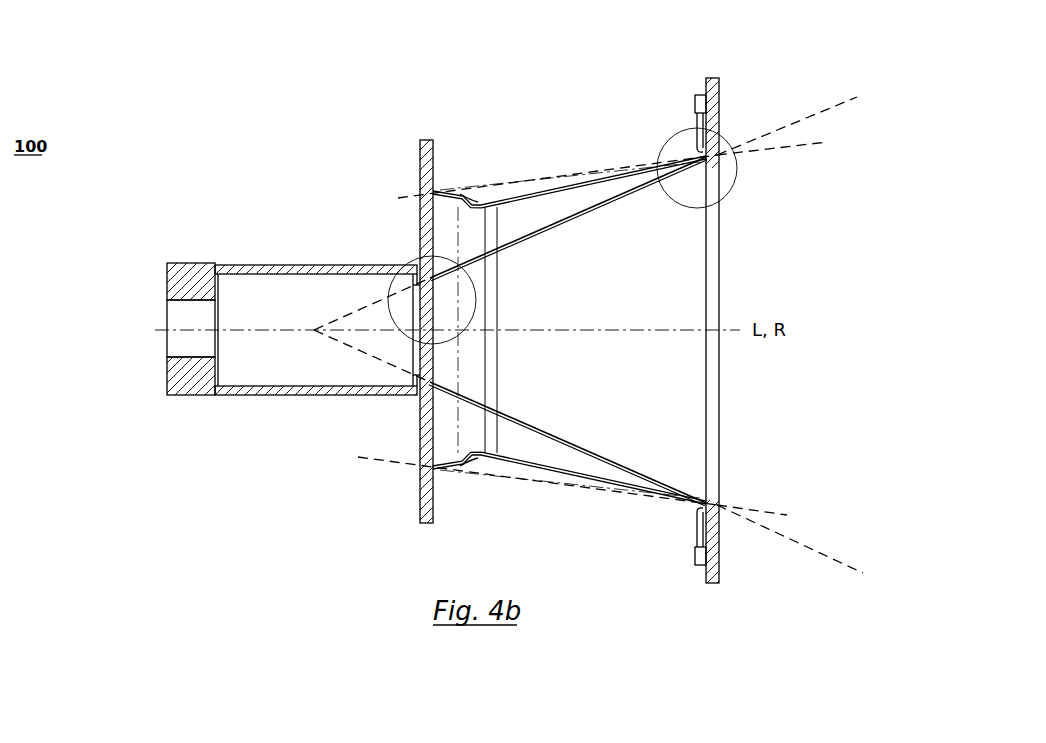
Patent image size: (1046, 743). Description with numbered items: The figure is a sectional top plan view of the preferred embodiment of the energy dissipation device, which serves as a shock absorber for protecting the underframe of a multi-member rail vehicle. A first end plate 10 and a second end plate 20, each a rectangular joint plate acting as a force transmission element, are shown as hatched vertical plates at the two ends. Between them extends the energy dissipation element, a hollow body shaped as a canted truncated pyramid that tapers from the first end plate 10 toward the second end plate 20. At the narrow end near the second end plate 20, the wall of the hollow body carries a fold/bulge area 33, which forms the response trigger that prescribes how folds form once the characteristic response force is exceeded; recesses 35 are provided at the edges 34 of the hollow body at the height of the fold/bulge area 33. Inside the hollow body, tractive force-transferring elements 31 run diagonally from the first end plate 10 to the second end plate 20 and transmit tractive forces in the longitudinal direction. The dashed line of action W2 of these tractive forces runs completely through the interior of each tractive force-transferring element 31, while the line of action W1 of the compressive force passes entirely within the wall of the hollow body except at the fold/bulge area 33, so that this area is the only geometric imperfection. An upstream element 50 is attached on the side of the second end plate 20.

The first end plate 10 is at (718, 523).
The second end plate 20 is at (425, 250).
The tractive force-transferring element 31 is at (625, 200).
The fold/bulge area 33 is at (539, 497).
The edge of the hollow body 34 is at (538, 180).
The recess 35 is at (476, 200).
The upstream element 50 is at (268, 290).
The line of action for the compressive force W1 is at (632, 331).
The line of action for the tractive forces W2 is at (632, 338).